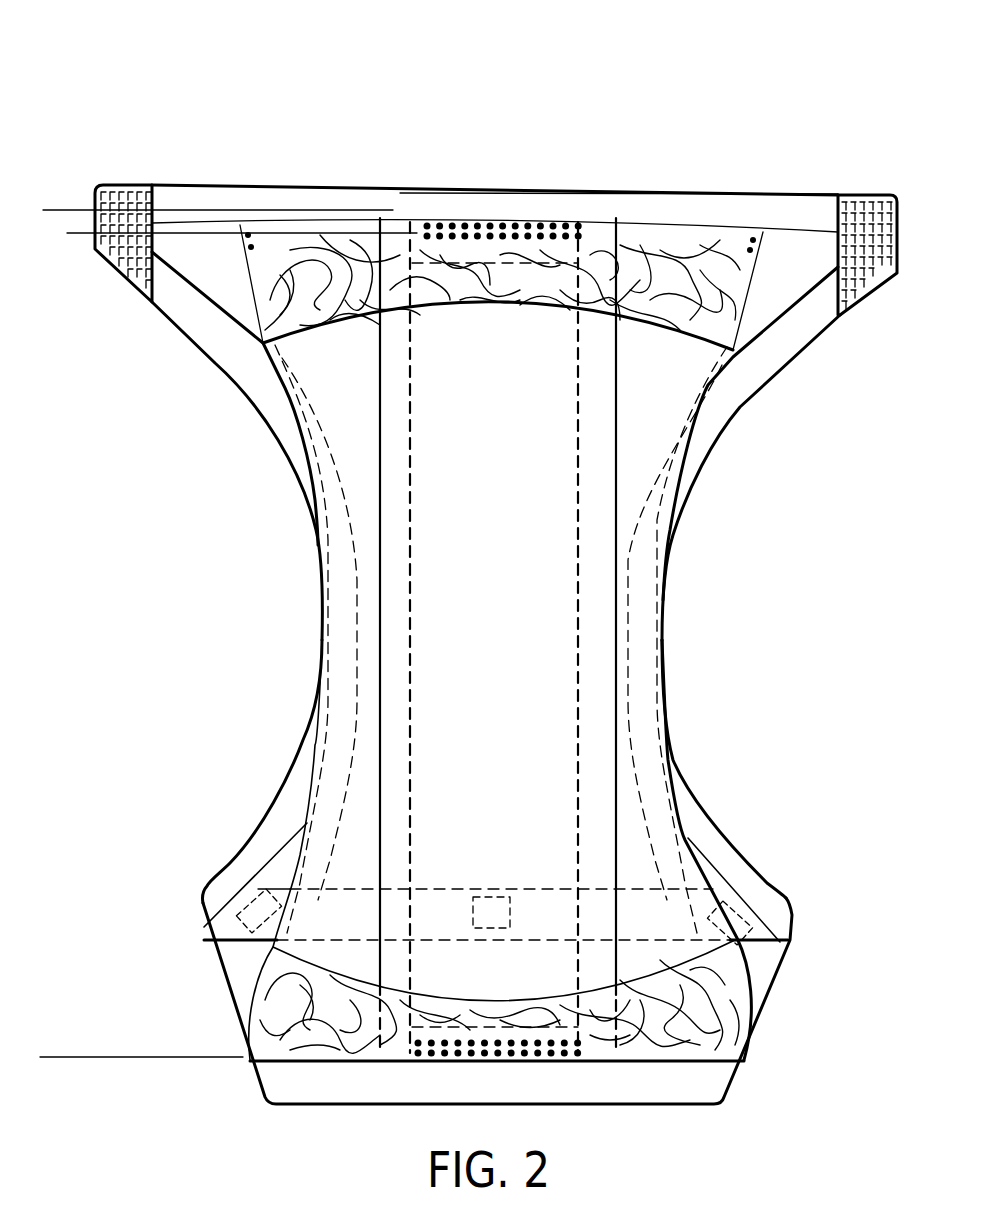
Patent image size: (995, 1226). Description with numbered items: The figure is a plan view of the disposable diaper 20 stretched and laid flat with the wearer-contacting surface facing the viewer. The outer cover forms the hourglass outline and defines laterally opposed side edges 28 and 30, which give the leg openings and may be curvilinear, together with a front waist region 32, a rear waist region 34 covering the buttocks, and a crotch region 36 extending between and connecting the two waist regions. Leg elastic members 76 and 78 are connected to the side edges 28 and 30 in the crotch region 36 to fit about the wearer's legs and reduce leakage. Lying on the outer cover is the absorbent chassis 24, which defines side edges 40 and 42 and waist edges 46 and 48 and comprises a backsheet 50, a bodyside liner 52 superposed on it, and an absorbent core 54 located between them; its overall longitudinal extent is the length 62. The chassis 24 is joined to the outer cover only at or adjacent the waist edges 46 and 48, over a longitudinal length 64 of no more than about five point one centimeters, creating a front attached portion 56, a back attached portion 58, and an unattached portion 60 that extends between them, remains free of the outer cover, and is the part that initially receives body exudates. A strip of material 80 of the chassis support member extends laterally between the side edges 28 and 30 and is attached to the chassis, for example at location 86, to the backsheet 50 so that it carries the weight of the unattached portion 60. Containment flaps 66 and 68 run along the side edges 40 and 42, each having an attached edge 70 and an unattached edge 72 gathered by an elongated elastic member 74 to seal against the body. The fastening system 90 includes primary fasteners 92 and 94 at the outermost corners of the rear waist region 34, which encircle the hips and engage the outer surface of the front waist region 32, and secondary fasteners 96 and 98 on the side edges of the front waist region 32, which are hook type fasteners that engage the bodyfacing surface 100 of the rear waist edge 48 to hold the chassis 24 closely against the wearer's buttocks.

The disposable diaper 20 is at (190, 63).
The absorbent chassis 24 is at (560, 617).
The side edge 28 is at (220, 873).
The side edge 30 is at (767, 882).
The front waist region 32 is at (787, 1023).
The rear waist region 34 is at (850, 328).
The crotch region 36 is at (733, 637).
The side edge 40 is at (303, 438).
The side edge 42 is at (700, 418).
The waist edge 46 is at (350, 220).
The rear waist edge 48 is at (720, 1075).
The backsheet 50 is at (672, 223).
The bodyside liner 52 is at (457, 337).
The absorbent core 54 is at (413, 405).
The front attached portion 56 is at (452, 1063).
The back attached portion 58 is at (527, 225).
The unattached portion 60 is at (505, 589).
The length 62 is at (55, 1057).
The longitudinal length 64 is at (80, 323).
The containment flap 66 is at (338, 822).
The containment flap 68 is at (650, 822).
The attached edge 70 is at (378, 492).
The unattached edge 72 is at (307, 465).
The elongated elastic member 74 is at (327, 573).
The leg elastic member 76 is at (200, 345).
The leg elastic member 78 is at (777, 363).
The strip of material 80 is at (440, 888).
The location 86 is at (507, 897).
The fastening system 90 is at (853, 137).
The primary fastener 92 is at (111, 187).
The primary fastener 94 is at (867, 240).
The secondary fastener 96 is at (204, 943).
The secondary fastener 98 is at (793, 957).
The bodyfacing surface 100 is at (713, 260).